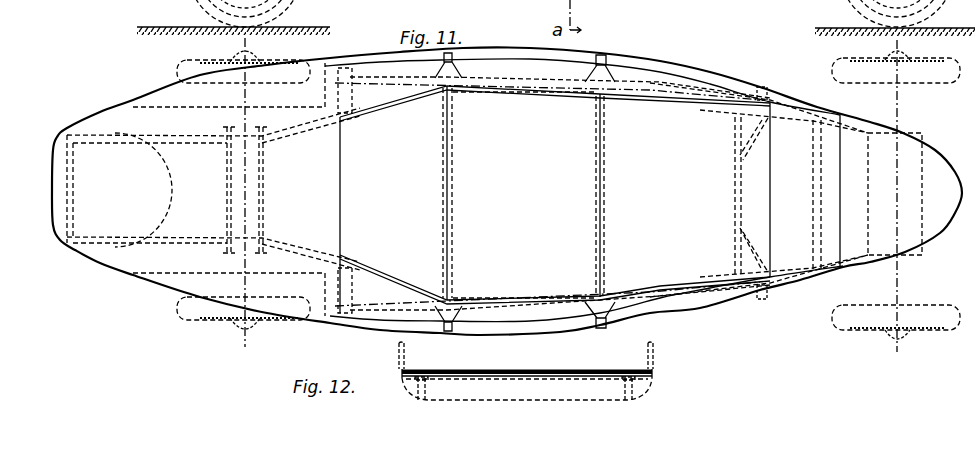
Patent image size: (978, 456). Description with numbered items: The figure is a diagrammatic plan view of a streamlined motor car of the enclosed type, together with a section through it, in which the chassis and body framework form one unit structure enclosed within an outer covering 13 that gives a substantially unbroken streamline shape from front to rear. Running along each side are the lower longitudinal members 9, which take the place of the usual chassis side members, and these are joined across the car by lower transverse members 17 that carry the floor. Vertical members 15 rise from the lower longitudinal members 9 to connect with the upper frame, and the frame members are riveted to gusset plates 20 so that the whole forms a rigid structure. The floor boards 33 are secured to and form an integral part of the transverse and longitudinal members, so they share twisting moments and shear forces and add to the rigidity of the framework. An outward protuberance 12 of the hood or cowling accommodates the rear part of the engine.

In FIG. 12, the lower longitudinal member 9 is at (428, 390).
In FIG. 11, the outward protuberance 12 is at (87, 162).
In FIG. 11, the outer covering 13 is at (732, 75).
In FIG. 12, the vertical member 15 is at (398, 352).
In FIG. 11, the lower transverse member 17 is at (448, 181).
In FIG. 12, the lower transverse member 17 is at (560, 387).
In FIG. 12, the gusset plate 20 is at (406, 392).
In FIG. 11, the floor board 33 is at (522, 118).
In FIG. 12, the floor board 33 is at (527, 366).